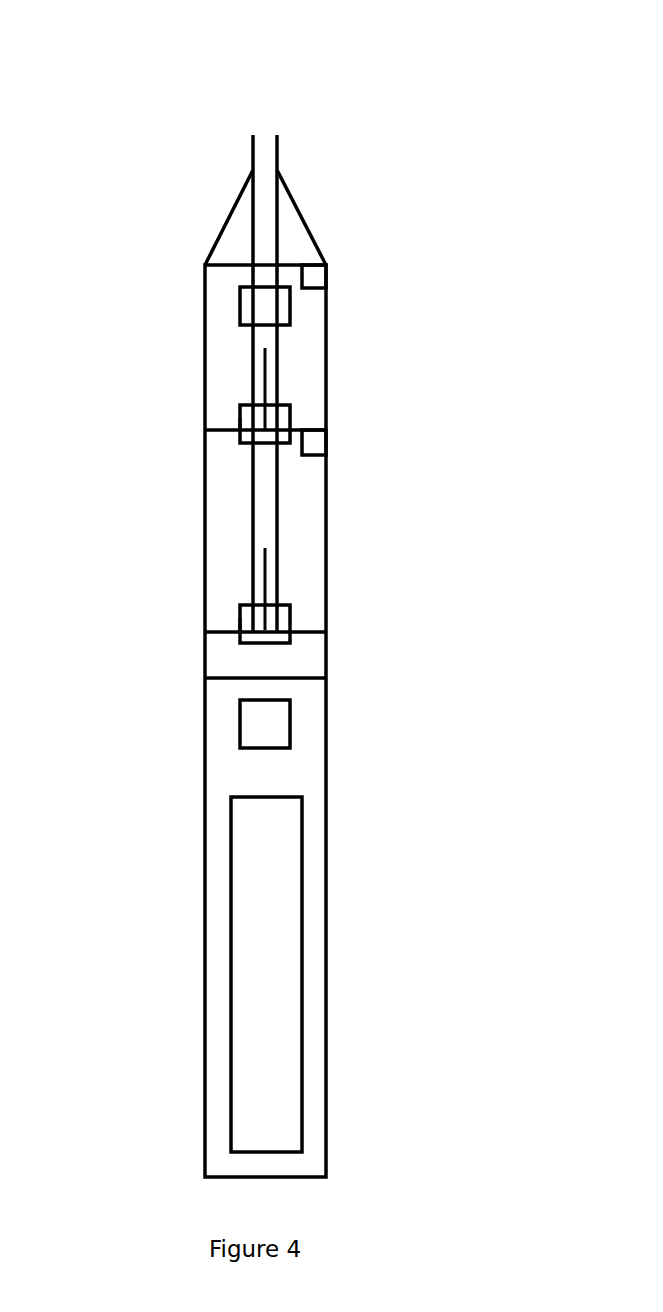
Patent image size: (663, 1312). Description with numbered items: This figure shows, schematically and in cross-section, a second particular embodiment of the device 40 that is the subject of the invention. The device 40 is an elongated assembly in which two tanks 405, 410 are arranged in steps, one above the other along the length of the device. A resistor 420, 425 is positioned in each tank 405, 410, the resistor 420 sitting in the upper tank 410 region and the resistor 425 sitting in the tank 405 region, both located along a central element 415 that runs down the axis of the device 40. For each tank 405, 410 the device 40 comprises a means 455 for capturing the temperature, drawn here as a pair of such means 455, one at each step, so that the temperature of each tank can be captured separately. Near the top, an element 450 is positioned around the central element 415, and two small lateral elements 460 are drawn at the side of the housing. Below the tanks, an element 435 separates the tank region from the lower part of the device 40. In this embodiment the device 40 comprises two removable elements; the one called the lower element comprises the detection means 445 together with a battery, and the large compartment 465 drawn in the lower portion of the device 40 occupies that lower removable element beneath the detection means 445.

The device 40 is at (267, 108).
The tank 405 is at (217, 490).
The tank 410 is at (217, 325).
The element corresponding to reference 115 of the first embodiment 415 is at (267, 166).
The resistor 420 is at (267, 405).
The resistor 425 is at (270, 605).
The element corresponding to reference 135 of the first embodiment 435 is at (205, 653).
The detection means 445 is at (276, 722).
The element corresponding to reference 150 of the first embodiment 450 is at (240, 300).
The means for capturing the temperature 455 is at (240, 418).
The switch 460 is at (310, 278).
The battery 465 is at (253, 962).